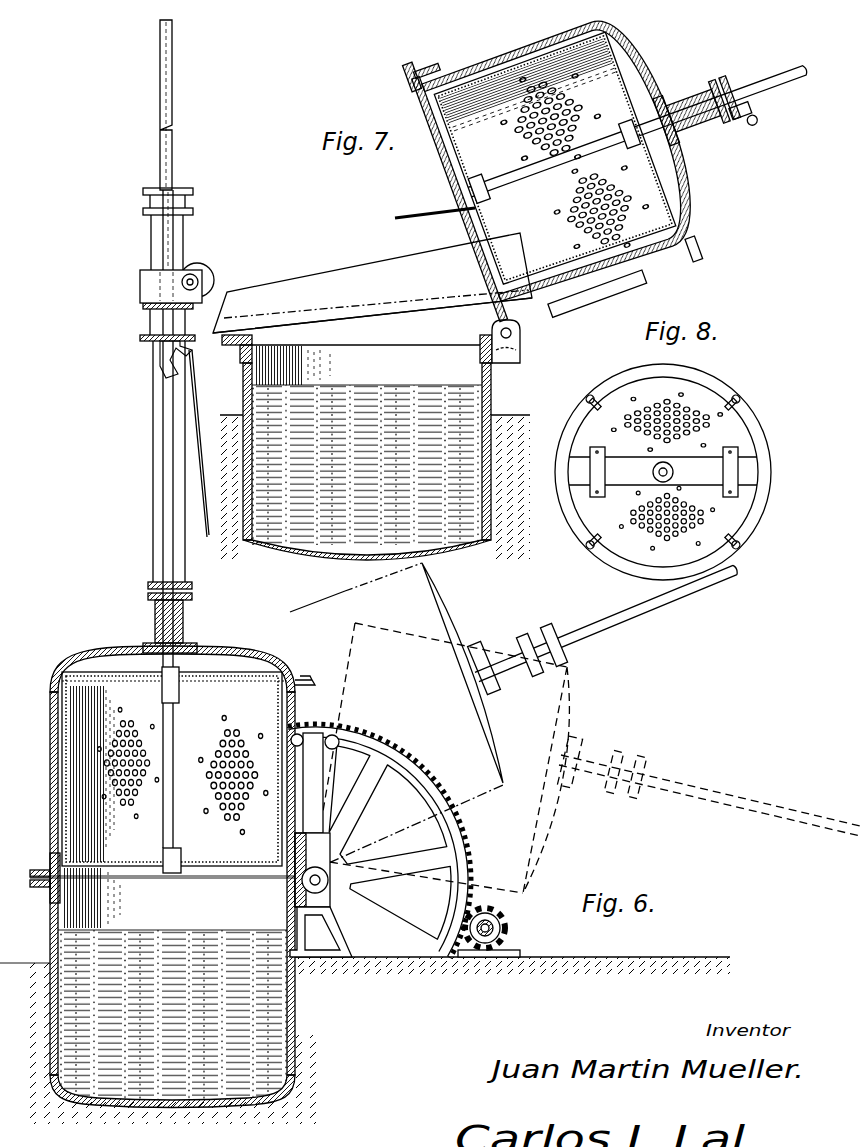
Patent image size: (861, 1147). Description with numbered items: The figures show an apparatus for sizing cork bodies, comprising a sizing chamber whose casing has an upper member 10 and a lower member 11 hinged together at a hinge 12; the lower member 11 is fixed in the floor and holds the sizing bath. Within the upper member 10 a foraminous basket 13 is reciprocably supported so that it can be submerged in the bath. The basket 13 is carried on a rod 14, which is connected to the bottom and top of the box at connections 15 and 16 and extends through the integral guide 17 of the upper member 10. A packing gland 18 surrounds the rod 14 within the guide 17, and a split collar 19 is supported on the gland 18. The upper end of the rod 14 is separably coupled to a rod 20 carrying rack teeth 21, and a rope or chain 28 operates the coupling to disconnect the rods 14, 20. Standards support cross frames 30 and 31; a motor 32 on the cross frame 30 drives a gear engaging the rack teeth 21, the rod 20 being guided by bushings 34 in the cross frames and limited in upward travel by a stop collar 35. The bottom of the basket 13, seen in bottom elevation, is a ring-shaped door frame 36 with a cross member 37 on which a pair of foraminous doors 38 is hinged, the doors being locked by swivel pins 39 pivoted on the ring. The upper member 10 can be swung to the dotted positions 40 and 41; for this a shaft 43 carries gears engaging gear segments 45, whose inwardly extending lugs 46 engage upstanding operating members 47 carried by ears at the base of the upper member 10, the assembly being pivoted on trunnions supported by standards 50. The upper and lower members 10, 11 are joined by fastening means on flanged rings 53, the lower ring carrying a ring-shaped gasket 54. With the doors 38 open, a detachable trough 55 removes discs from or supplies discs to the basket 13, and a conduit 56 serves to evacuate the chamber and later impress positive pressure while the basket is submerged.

In FIG. 6, the upper member 10 is at (50, 778).
In FIG. 7, the upper member 10 is at (562, 168).
In FIG. 6, the lower member 11 is at (50, 938).
In FIG. 6, the hinge 12 is at (512, 345).
In FIG. 6, the foraminous basket 13 is at (188, 712).
In FIG. 7, the foraminous basket 13 is at (555, 161).
In FIG. 6, the rod 14 is at (173, 760).
In FIG. 8, the rod 14 is at (674, 472).
In FIG. 6, the connection to bottom of box 15 is at (183, 853).
In FIG. 6, the connection to top of box 16 is at (175, 672).
In FIG. 6, the guide 17 is at (183, 622).
In FIG. 6, the packing gland 18 is at (192, 585).
In FIG. 6, the split collar 19 is at (153, 575).
In FIG. 7, the split collar 19 is at (639, 135).
In FIG. 6, the rod 20 is at (160, 250).
In FIG. 6, the rack teeth 21 is at (174, 112).
In FIG. 6, the rope or chain 28 is at (204, 410).
In FIG. 6, the cross frame 30 is at (150, 332).
In FIG. 6, the cross frame 31 is at (143, 205).
In FIG. 6, the motor 32 is at (208, 272).
In FIG. 6, the bushings 34 is at (178, 192).
In FIG. 6, the stop collar 35 is at (158, 344).
In FIG. 8, the door frame 36 is at (748, 415).
In FIG. 8, the cross member 37 is at (752, 472).
In FIG. 7, the foraminous doors 38 is at (424, 216).
In FIG. 8, the foraminous doors 38 is at (698, 383).
In FIG. 8, the swivel pins 39 is at (740, 544).
In FIG. 6, the dotted line position 40 is at (345, 596).
In FIG. 6, the dotted line position 41 is at (574, 722).
In FIG. 6, the shaft 43 is at (490, 922).
In FIG. 6, the gear segments 45 is at (462, 868).
In FIG. 6, the lugs 46 is at (345, 738).
In FIG. 6, the operating members 47 is at (312, 778).
In FIG. 6, the standards 50 is at (330, 950).
In FIG. 6, the flanged rings 53 is at (50, 858).
In FIG. 6, the gasket 54 is at (40, 888).
In FIG. 6, the detachable trough 55 is at (332, 276).
In FIG. 6, the conduit 56 is at (305, 678).